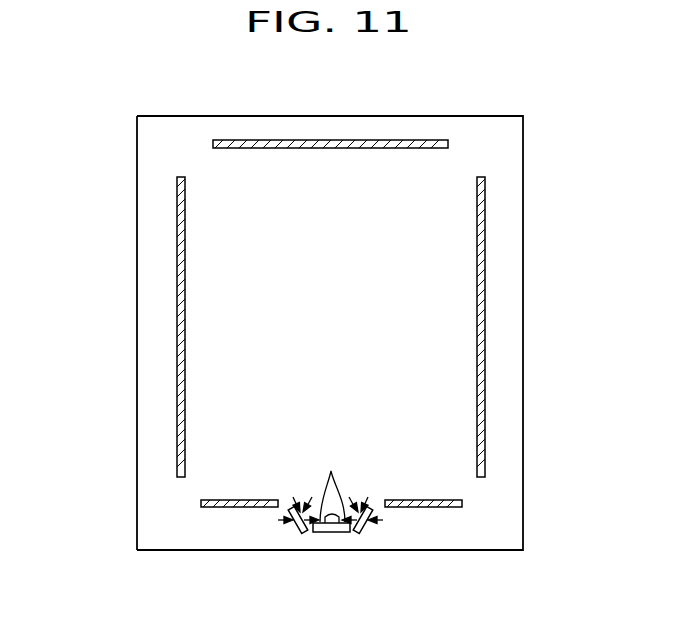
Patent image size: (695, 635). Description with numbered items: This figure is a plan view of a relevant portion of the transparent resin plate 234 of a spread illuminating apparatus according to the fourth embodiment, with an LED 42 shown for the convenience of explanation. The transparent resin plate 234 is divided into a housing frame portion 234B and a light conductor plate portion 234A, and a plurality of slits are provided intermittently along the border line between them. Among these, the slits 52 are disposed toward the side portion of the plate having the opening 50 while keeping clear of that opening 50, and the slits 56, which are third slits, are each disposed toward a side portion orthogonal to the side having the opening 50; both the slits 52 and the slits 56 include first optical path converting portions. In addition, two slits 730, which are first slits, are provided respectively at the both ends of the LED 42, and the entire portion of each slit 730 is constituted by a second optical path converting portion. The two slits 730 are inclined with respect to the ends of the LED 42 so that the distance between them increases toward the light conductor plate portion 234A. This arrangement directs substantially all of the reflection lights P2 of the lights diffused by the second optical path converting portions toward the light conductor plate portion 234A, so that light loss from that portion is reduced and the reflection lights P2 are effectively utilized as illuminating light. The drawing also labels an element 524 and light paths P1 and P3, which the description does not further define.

The transparent resin plate 234 is at (523, 388).
The light conductor plate portion 234A is at (355, 308).
The housing frame portion 234B is at (134, 416).
The upper electrode plate (524a) 524 is at (307, 139).
The slits (third slits) 56 is at (177, 262).
The slits 52 is at (245, 500).
The LED 42 is at (346, 534).
The opening 50 is at (323, 540).
The slits (first slits) 730 is at (293, 531).
The plasma / flow direction P1 is at (332, 471).
The reflection lights P2 is at (315, 490).
The spray direction P3 is at (278, 521).